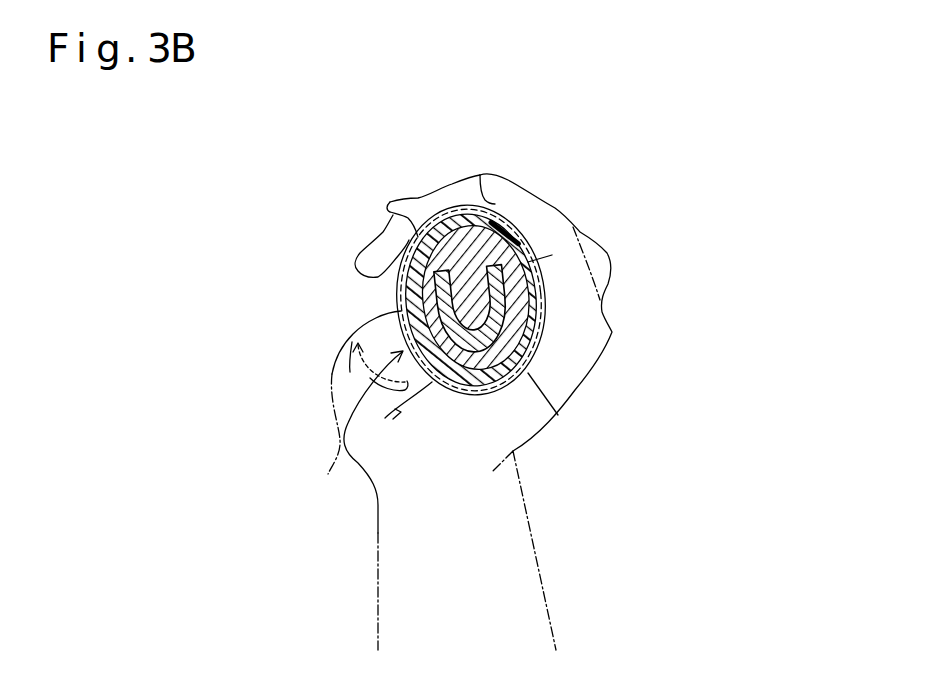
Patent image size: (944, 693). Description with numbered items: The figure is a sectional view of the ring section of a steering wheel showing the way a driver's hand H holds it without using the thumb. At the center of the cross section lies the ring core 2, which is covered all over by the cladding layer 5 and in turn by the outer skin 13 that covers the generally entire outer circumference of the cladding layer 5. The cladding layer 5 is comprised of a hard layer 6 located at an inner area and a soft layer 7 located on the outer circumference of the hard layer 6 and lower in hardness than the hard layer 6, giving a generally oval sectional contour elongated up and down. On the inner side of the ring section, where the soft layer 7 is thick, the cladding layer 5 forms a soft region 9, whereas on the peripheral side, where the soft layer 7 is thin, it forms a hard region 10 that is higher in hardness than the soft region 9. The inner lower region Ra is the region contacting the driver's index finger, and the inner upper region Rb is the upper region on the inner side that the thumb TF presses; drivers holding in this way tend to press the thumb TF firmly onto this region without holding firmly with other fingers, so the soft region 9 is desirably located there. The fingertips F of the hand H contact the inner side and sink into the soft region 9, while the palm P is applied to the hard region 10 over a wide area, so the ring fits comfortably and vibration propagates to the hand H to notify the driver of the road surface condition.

The ring core 2 is at (541, 352).
The outer skin 13 is at (541, 312).
The soft region 9 is at (390, 298).
The cladding layer 5 is at (462, 386).
The hard layer 6 is at (450, 381).
The soft layer 7 is at (477, 386).
The hard region 10 is at (515, 388).
The fingertips F is at (381, 262).
The inner lower region Ra is at (433, 216).
The inner upper region Rb is at (356, 480).
The hand H is at (636, 301).
The thumb TF is at (377, 331).
The palm P is at (558, 415).